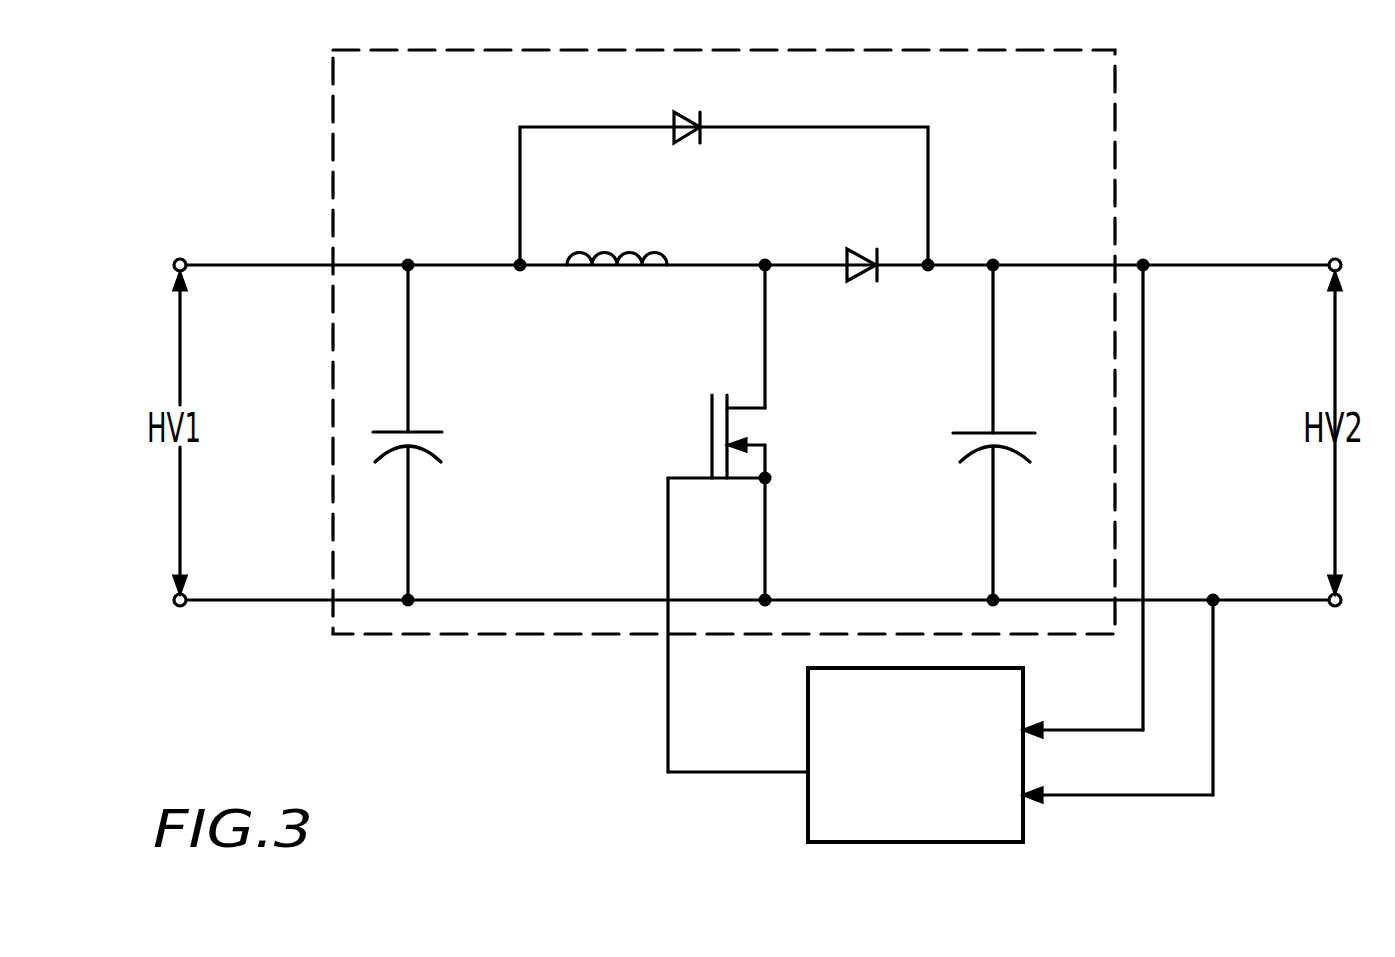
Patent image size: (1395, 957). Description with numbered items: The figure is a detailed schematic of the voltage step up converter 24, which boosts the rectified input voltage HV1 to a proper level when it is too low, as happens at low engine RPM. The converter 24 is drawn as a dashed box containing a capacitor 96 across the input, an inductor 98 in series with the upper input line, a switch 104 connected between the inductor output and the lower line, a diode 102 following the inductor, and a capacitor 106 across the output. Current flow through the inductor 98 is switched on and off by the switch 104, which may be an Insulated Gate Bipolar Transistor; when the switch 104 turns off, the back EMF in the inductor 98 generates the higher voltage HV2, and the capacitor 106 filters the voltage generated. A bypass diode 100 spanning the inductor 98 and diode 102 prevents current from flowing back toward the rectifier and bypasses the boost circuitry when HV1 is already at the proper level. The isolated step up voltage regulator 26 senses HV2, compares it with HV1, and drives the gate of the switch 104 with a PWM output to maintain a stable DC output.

The voltage step up converter 24 is at (612, 636).
The isolated step up voltage regulator 26 is at (1005, 668).
The input capacitor 96 is at (432, 442).
The inductor 98 is at (622, 262).
The bypass diode 100 is at (727, 80).
The output diode 102 is at (862, 250).
The switch 104 is at (745, 431).
The capacitor 106 is at (1020, 446).